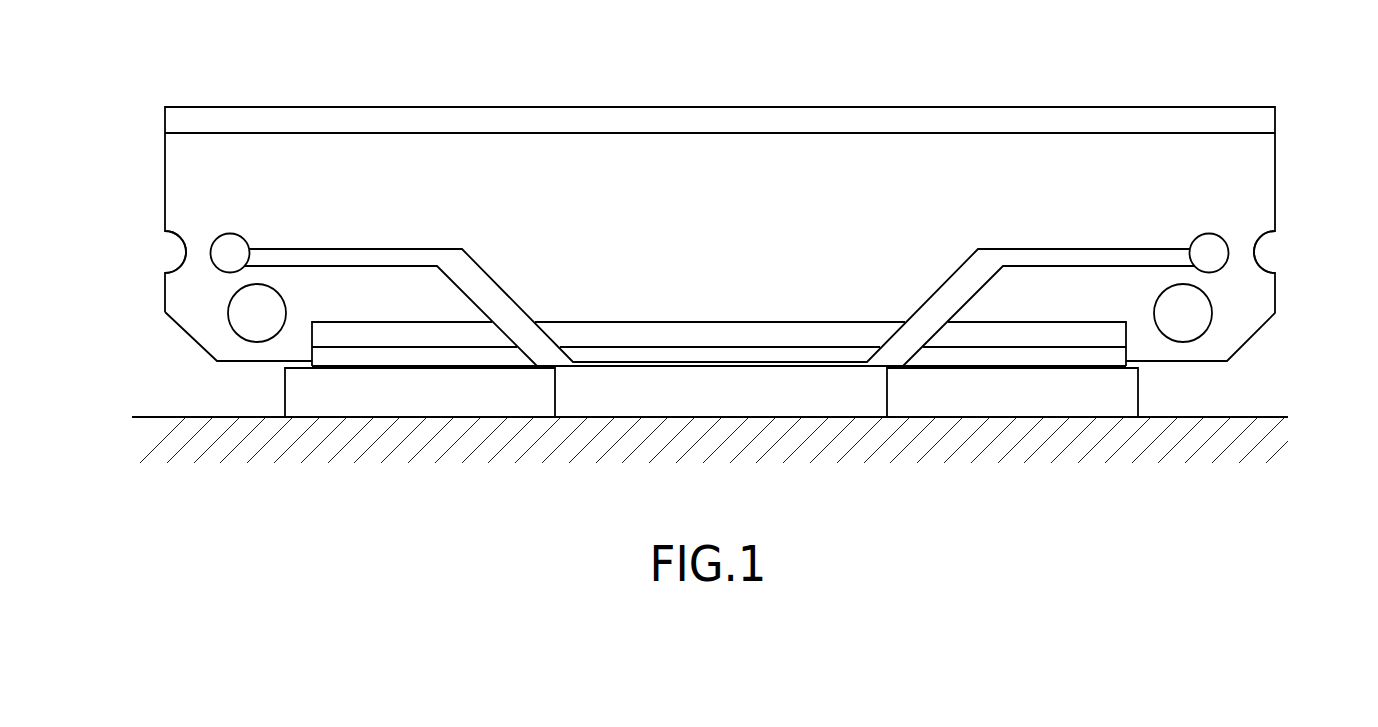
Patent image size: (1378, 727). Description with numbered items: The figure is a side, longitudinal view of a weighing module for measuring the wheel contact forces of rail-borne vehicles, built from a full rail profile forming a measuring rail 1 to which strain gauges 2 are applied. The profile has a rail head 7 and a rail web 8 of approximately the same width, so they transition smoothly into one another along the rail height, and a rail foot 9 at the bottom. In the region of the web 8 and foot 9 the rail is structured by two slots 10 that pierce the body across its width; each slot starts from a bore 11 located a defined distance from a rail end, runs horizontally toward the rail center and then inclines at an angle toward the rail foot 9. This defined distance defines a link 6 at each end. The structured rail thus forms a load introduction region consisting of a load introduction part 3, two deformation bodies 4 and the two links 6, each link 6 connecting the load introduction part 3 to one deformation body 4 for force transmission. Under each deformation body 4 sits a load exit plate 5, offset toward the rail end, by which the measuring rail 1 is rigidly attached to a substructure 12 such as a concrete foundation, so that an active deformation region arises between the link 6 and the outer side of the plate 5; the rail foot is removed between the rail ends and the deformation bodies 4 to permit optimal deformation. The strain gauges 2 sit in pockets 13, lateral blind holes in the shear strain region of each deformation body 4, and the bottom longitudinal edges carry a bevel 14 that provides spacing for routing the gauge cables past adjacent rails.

The measuring rail 1 is at (836, 68).
The strain gauges 2 is at (1192, 316).
The load introduction part 3 is at (706, 181).
The deformation bodies 4 is at (290, 335).
The load exit plate 5 is at (493, 397).
The links 6 is at (200, 258).
The rail head 7 is at (520, 120).
The rail web 8 is at (710, 298).
The rail foot 9 is at (779, 334).
The slots 10 is at (357, 260).
The bore 11 is at (1210, 246).
The substructure 12 is at (745, 460).
The pocket 13 is at (236, 352).
The bevel 14 is at (163, 344).